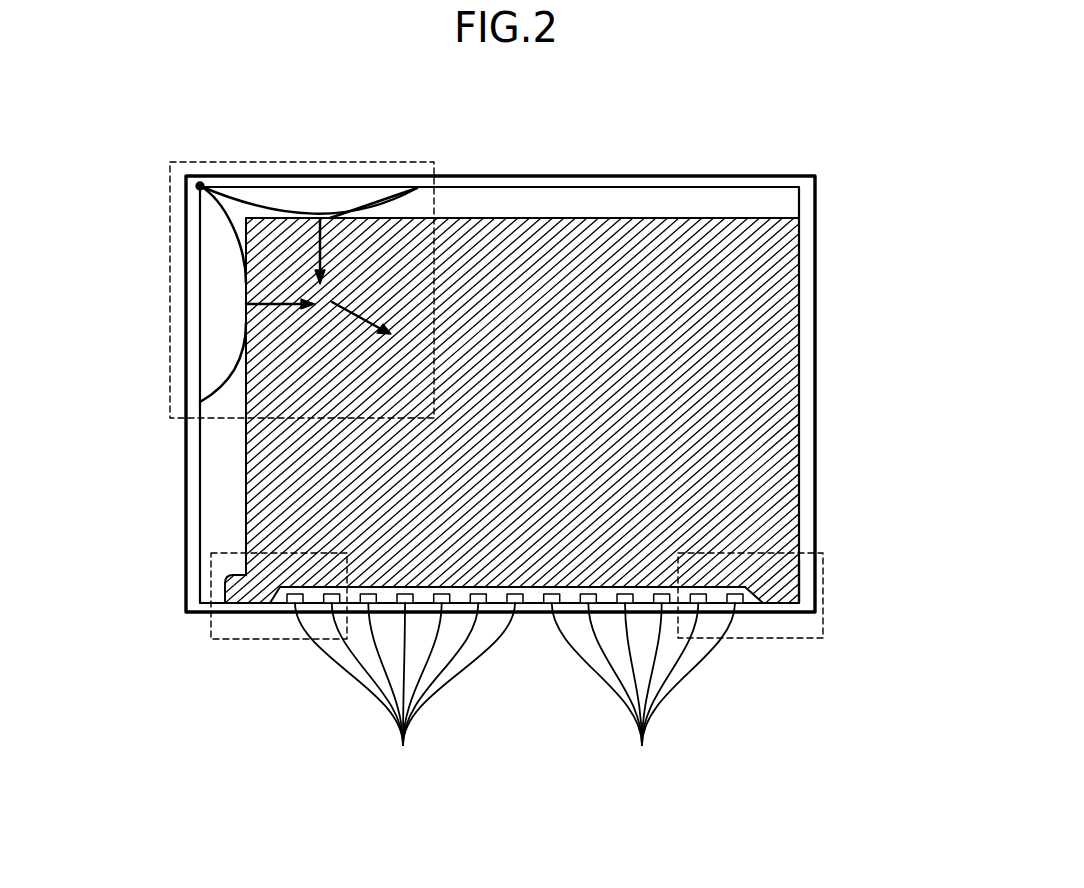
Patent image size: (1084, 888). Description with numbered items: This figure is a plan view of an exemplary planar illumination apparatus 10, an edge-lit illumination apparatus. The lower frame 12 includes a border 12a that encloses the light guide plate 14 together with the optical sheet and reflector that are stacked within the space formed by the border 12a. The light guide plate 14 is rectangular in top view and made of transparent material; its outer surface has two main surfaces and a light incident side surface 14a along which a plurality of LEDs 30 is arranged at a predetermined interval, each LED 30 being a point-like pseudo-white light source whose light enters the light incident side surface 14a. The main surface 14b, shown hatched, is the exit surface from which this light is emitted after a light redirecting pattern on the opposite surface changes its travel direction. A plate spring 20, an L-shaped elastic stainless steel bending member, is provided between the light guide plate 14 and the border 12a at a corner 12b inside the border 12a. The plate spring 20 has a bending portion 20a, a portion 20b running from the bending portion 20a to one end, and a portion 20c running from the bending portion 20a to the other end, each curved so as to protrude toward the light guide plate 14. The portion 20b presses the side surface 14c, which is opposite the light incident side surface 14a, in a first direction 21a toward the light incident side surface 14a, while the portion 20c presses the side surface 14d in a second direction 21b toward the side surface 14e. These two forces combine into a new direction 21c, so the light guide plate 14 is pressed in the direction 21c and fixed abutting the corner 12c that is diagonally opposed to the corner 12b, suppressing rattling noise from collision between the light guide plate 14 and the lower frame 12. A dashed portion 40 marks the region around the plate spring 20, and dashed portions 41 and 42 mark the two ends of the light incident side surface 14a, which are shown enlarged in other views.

The planar illumination apparatus 10 is at (660, 139).
The lower frame 12 is at (697, 176).
The border 12a is at (597, 183).
The corner 12b is at (248, 186).
The corner 12c is at (782, 597).
The light guide plate 14 is at (547, 245).
The light incident side surface 14a is at (533, 587).
The main surface (exit surface) 14b is at (771, 401).
The side surface 14c is at (758, 217).
The side surface 14d is at (246, 490).
The side surface 14e is at (801, 457).
The plate spring 20 is at (221, 204).
The bending portion 20a is at (200, 182).
The portion 20b is at (363, 188).
The portion 20c is at (223, 228).
The direction 21a is at (321, 247).
The direction 21b is at (270, 305).
The direction 21c is at (365, 313).
The LED 30 is at (515, 688).
The portion 40 is at (170, 183).
The portion 41 is at (210, 623).
The portion 42 is at (823, 625).